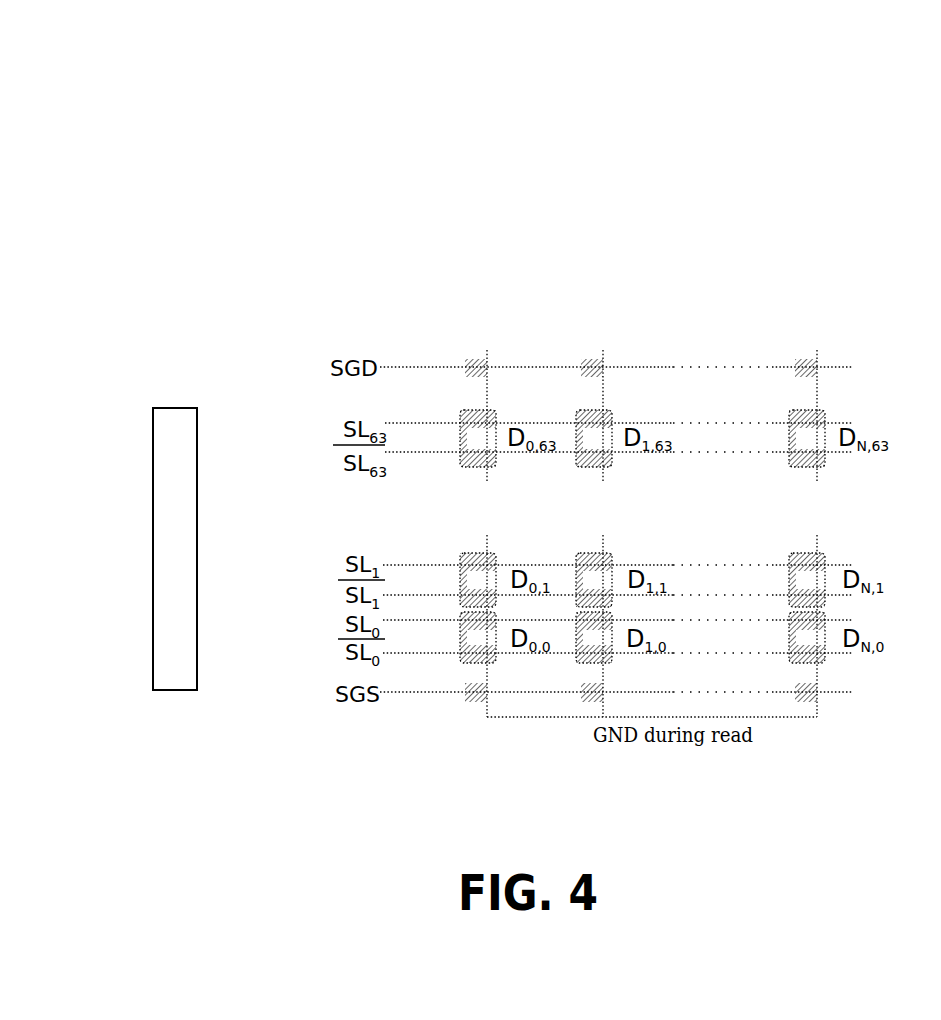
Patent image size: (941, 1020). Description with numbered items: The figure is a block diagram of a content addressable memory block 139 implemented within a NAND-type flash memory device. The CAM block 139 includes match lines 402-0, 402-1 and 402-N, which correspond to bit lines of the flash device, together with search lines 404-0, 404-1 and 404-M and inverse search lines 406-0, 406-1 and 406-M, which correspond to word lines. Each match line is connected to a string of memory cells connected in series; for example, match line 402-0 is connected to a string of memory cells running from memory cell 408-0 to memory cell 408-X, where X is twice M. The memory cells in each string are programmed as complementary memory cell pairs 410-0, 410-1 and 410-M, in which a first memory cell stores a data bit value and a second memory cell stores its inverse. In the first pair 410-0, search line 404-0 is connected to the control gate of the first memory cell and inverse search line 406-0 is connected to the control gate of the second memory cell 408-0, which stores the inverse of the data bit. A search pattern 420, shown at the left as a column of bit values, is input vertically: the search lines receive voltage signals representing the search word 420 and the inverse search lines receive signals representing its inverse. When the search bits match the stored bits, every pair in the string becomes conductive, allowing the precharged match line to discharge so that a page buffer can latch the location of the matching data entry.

The CAM block 139 is at (307, 88).
The search pattern 420 is at (153, 428).
The match line 402-0 is at (487, 351).
The match line 402-1 is at (603, 351).
The match line 402-N is at (817, 351).
The search line 404-M is at (447, 423).
The inverse search line 406-M is at (447, 452).
The search line 404-1 is at (446, 565).
The inverse search line 406-1 is at (446, 595).
The search line 404-0 is at (446, 620).
The inverse search line 406-0 is at (446, 653).
The memory cell 408-X is at (490, 417).
The memory cell 408-0 is at (490, 664).
The complementary memory cell pair 410-M is at (490, 466).
The complementary memory cell pair 410-1 is at (490, 556).
The complementary memory cell pair 410-0 is at (490, 620).